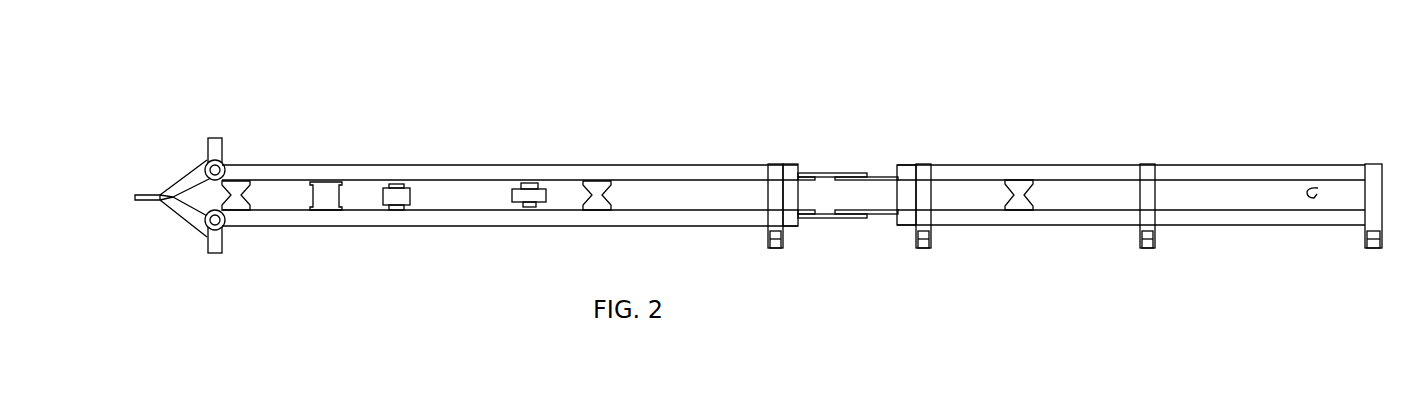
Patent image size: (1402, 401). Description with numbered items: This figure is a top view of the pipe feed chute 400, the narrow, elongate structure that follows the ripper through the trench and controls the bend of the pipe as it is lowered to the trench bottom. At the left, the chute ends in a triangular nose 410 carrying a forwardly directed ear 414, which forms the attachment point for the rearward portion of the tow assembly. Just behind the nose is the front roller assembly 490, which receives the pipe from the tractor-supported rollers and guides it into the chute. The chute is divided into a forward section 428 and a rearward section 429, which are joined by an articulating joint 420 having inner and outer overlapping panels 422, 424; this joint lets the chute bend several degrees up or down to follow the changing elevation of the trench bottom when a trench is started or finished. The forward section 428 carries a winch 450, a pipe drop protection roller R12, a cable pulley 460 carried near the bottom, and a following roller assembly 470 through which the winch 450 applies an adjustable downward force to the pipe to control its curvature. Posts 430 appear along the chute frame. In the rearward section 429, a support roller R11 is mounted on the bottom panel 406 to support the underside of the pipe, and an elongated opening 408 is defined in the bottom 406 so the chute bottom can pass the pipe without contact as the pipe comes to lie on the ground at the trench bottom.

The pipe feed chute 400 is at (910, 77).
The triangular nose 410 is at (190, 163).
The ear 414 is at (143, 203).
The front roller assembly 490 is at (240, 150).
The winch 450 is at (330, 192).
The pipe drop protection roller R12 is at (397, 192).
The cable pulley 460 is at (540, 186).
The following roller assembly 470 is at (597, 182).
The forward section 428 is at (697, 122).
The frame end post 430 is at (775, 172).
The articulating joint 420 is at (825, 172).
The outer overlapping panel 424 is at (822, 226).
The inner overlapping panel 422 is at (882, 220).
The bottom panel 406 is at (963, 193).
The rearward section 429 is at (1065, 135).
The support roller R11 is at (1018, 205).
The opening 408 is at (1306, 190).